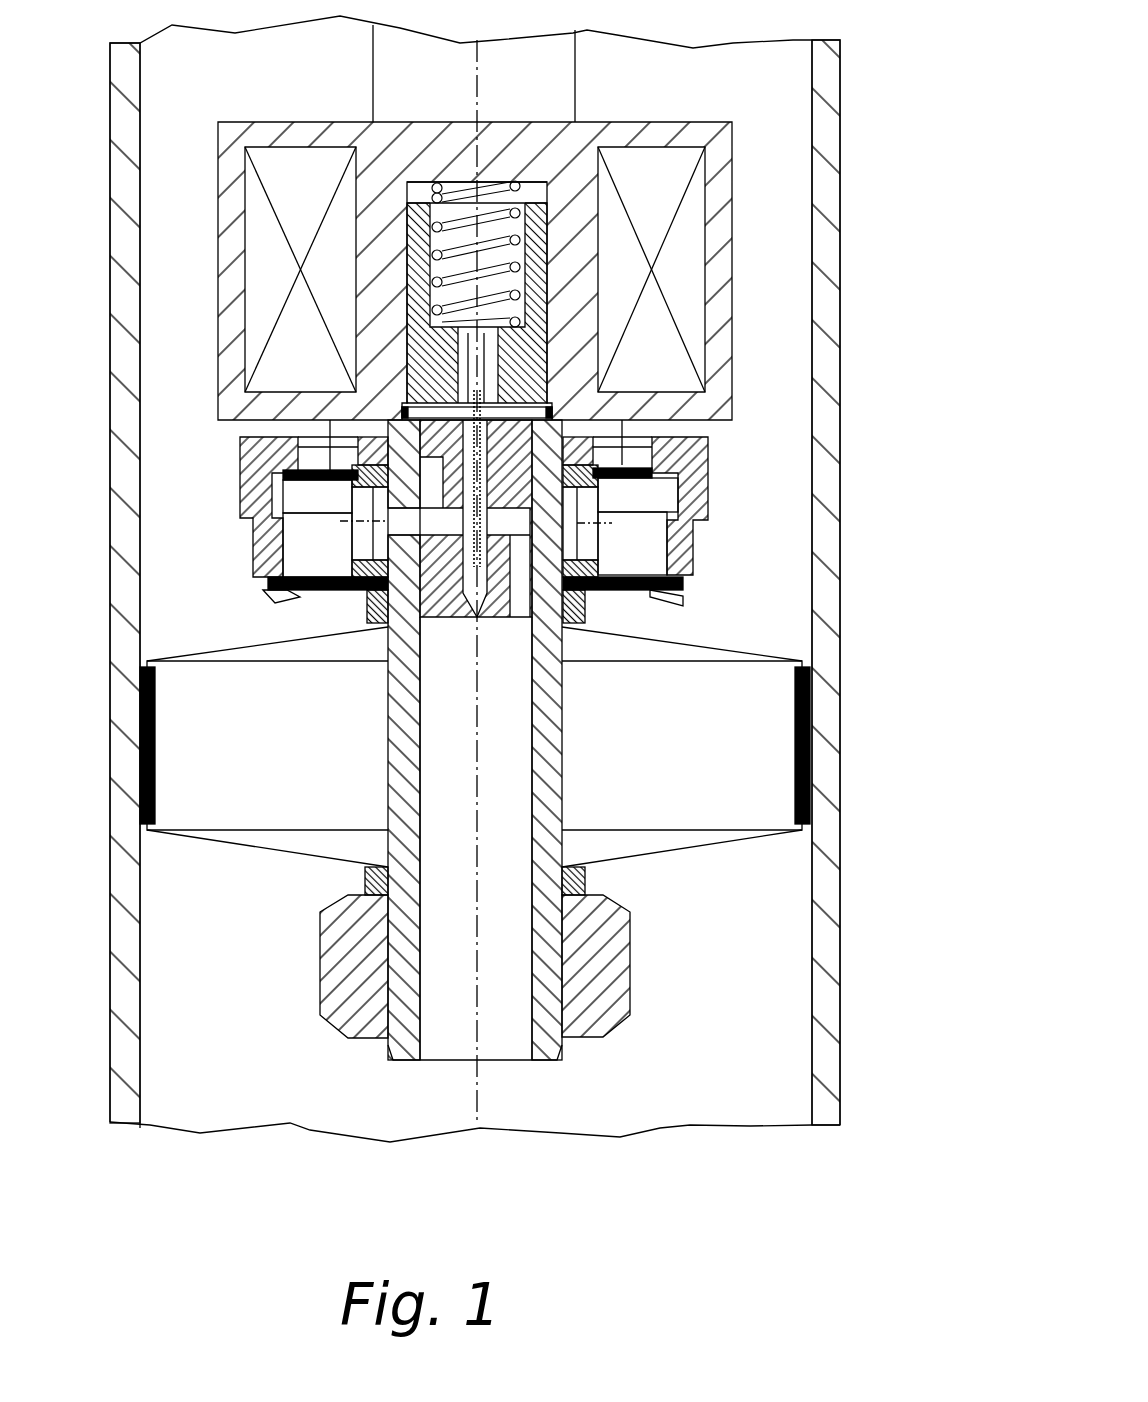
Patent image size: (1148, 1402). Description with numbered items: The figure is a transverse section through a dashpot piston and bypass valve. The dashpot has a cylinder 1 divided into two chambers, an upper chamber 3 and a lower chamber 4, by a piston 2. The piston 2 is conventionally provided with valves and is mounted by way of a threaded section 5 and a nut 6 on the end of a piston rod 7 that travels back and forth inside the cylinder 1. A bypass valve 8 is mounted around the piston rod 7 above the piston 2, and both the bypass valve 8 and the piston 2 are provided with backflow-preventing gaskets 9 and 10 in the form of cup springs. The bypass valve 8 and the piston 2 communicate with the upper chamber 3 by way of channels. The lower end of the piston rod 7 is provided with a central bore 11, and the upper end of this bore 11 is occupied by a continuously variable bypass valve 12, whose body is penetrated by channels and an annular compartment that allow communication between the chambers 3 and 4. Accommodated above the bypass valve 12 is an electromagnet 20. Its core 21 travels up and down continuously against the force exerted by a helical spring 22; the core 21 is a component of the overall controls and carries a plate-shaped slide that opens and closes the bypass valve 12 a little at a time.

The cylinder 1 is at (826, 322).
The piston 2 is at (740, 720).
The upper chamber 3 is at (778, 515).
The lower chamber 4 is at (765, 990).
The threaded section 5 is at (397, 977).
The nut 6 is at (328, 982).
The piston rod 7 is at (402, 737).
The bypass valve 8 is at (748, 456).
The backflow-preventing gasket 9 is at (262, 488).
The backflow-preventing gasket 10 is at (268, 600).
The central bore 11 is at (512, 1027).
The continuously variable bypass valve 12 is at (440, 600).
The electromagnet 20 is at (547, 360).
The core 21 is at (698, 236).
The helical spring 22 is at (547, 210).